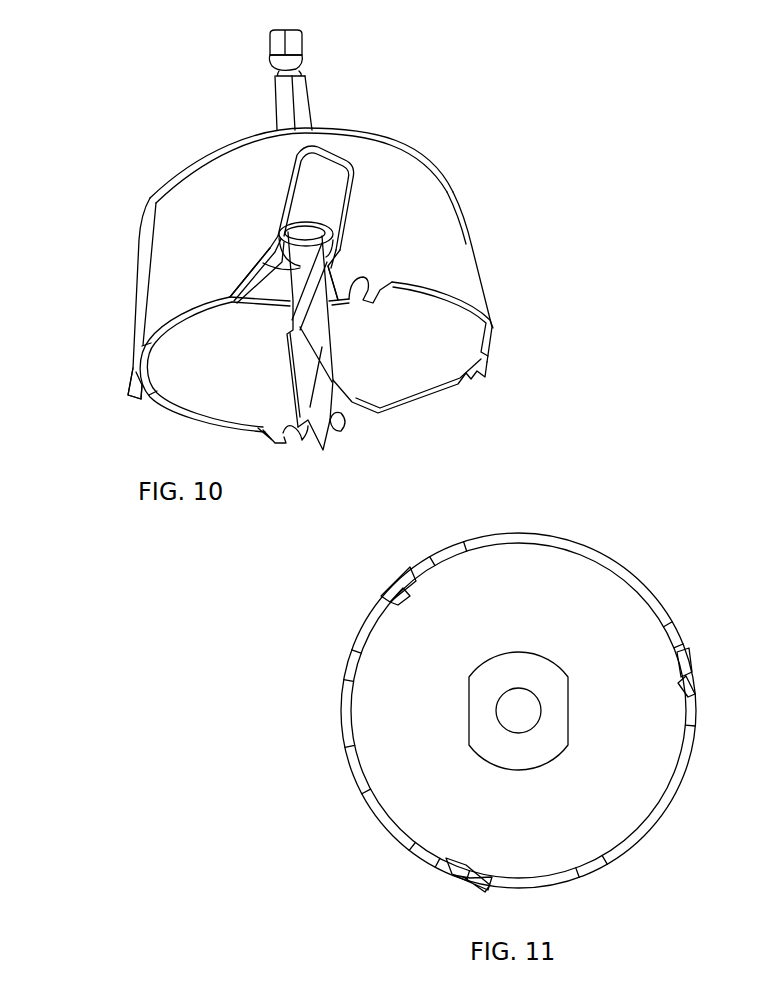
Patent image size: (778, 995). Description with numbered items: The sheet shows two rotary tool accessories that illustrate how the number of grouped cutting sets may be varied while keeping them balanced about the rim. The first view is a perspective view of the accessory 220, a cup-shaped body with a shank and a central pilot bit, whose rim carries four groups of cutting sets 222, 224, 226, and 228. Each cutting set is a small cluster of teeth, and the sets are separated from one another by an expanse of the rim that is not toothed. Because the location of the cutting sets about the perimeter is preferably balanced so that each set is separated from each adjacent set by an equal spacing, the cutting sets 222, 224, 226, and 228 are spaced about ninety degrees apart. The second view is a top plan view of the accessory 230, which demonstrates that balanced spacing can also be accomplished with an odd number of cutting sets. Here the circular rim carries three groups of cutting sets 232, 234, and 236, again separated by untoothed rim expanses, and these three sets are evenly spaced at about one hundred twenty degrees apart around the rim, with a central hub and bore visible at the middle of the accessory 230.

In FIG. 10, the accessory 220 is at (316, 286).
In FIG. 10, the cutting set 222 is at (383, 249).
In FIG. 10, the cutting set 224 is at (512, 334).
In FIG. 10, the cutting set 226 is at (141, 407).
In FIG. 10, the cutting set 228 is at (357, 440).
In FIG. 11, the accessory 230 is at (500, 686).
In FIG. 11, the cutting set 232 is at (693, 641).
In FIG. 11, the cutting set 234 is at (425, 877).
In FIG. 11, the cutting set 236 is at (338, 613).